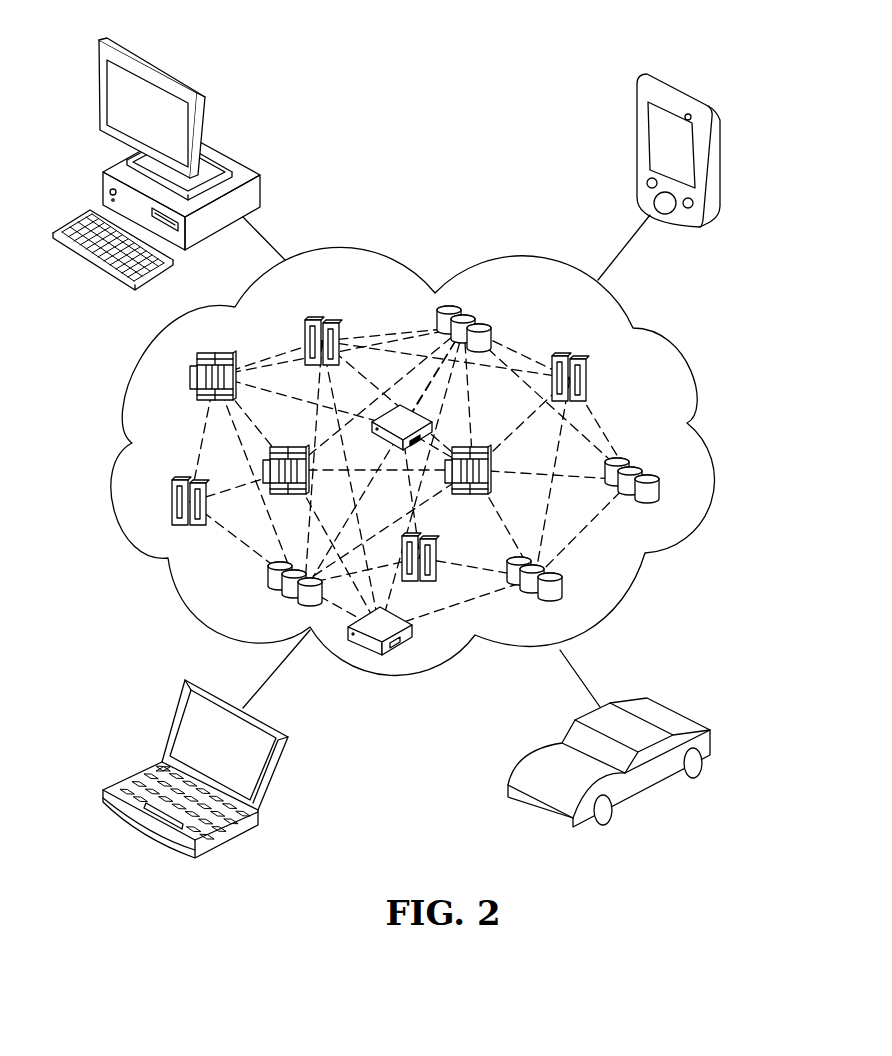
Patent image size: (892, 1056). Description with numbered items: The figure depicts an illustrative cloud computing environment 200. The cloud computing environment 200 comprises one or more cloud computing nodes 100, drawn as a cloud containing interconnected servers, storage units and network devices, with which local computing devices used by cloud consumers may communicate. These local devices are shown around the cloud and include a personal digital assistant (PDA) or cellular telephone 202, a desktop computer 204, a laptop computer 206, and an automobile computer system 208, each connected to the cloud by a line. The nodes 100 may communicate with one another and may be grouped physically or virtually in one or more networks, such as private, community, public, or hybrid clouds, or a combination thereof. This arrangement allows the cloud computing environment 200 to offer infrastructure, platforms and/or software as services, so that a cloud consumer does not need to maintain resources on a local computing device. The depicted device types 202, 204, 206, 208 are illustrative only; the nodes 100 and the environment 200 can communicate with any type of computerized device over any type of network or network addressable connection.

The cloud computing environment 200 is at (431, 12).
The cloud computing nodes 100 is at (631, 402).
The personal digital assistant (PDA) or cellular telephone 202 is at (638, 120).
The desktop computer 204 is at (262, 188).
The laptop computer 206 is at (287, 745).
The automobile computer system 208 is at (713, 748).